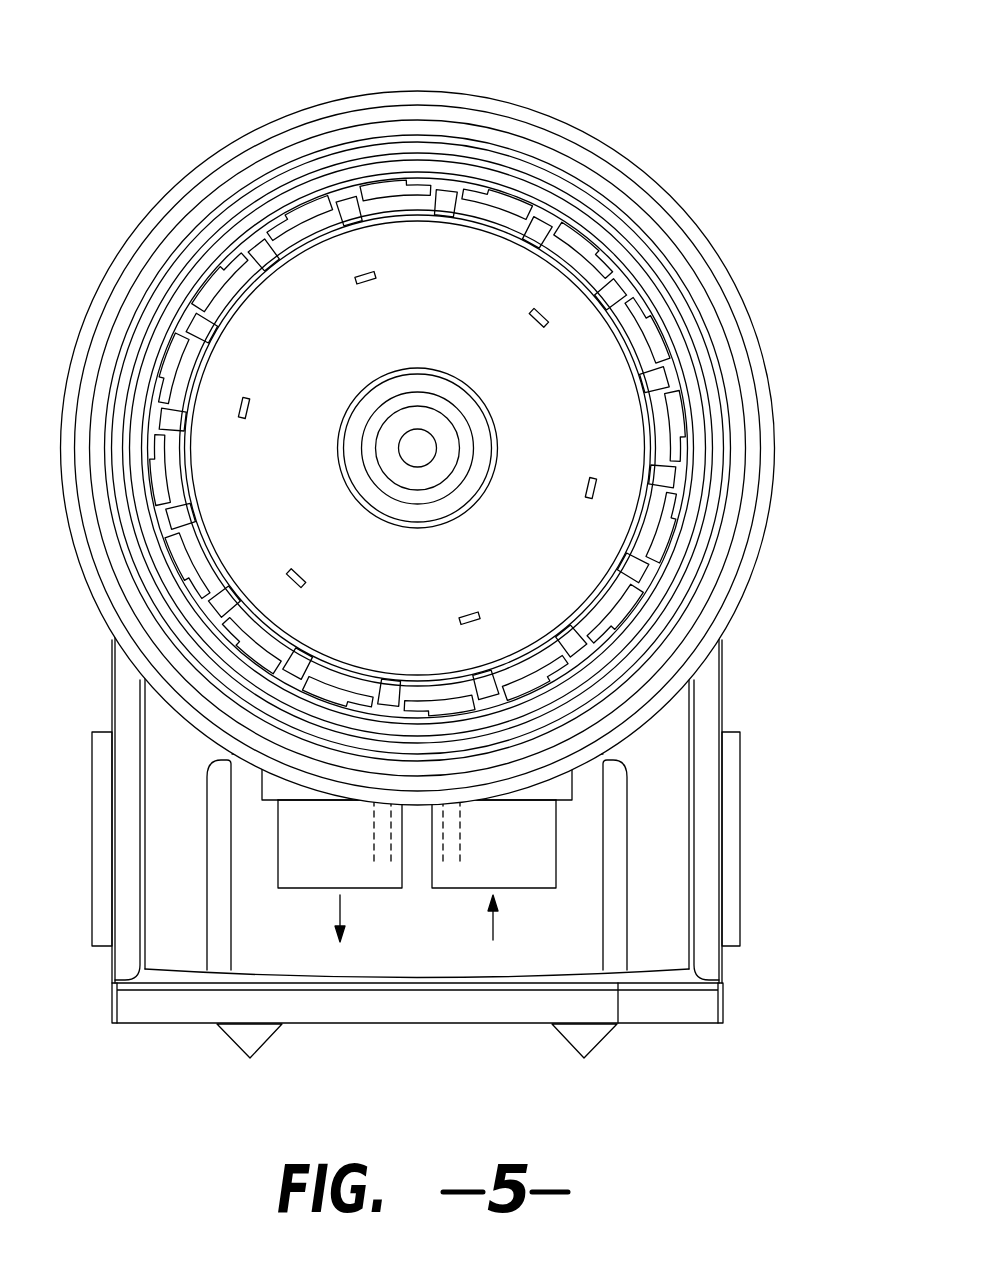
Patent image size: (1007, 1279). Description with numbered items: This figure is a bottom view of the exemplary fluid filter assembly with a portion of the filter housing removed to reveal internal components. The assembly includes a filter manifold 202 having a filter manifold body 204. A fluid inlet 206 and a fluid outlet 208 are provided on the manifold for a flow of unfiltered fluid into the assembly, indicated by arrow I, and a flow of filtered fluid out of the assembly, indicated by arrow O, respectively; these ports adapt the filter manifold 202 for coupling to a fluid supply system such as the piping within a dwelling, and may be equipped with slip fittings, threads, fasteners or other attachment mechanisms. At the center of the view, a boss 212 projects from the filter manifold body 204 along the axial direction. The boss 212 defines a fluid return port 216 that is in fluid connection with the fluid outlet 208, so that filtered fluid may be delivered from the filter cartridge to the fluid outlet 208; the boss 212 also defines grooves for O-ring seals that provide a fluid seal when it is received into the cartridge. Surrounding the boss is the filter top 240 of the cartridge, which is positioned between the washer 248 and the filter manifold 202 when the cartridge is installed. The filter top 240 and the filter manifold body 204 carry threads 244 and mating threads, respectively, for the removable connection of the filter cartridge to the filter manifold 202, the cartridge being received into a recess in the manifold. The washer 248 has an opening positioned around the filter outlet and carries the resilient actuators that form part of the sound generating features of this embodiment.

The filter manifold 202 is at (662, 98).
The filter manifold body 204 is at (705, 702).
The fluid inlet 206 is at (540, 862).
The fluid outlet 208 is at (290, 860).
The boss 212 is at (421, 397).
The fluid return port 216 is at (422, 447).
The filter top 240 is at (688, 232).
The threads 244 is at (350, 181).
The washer 248 is at (302, 295).